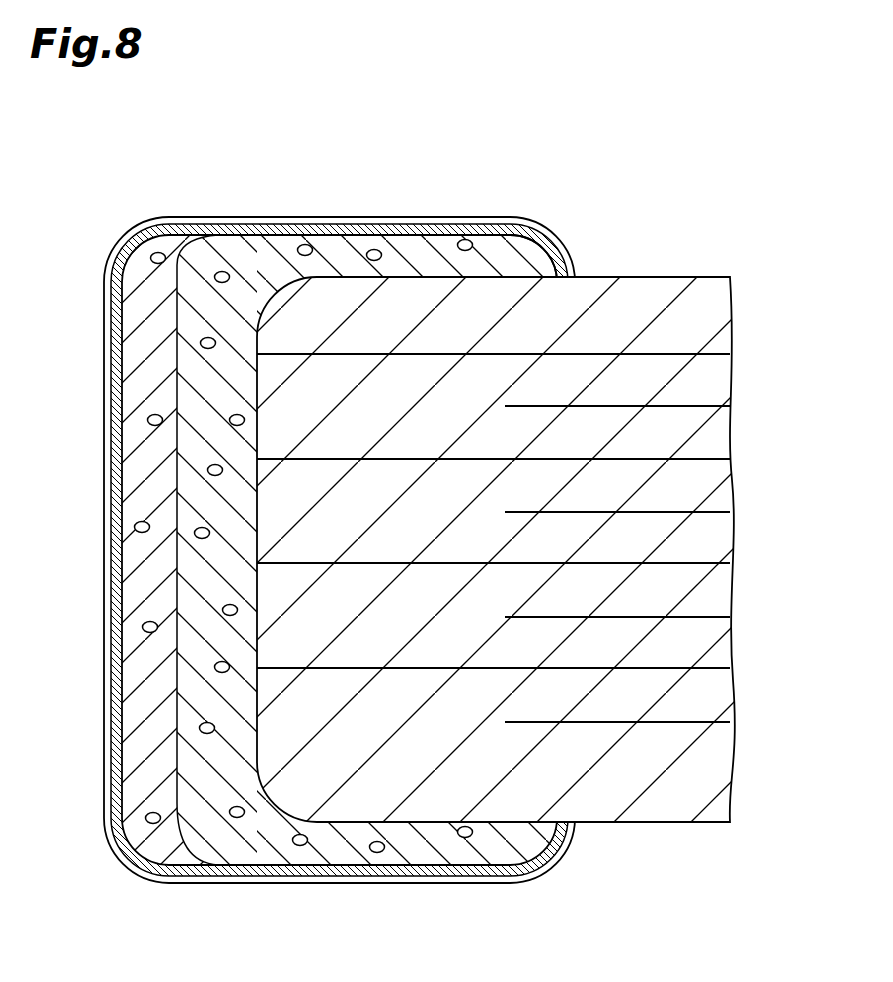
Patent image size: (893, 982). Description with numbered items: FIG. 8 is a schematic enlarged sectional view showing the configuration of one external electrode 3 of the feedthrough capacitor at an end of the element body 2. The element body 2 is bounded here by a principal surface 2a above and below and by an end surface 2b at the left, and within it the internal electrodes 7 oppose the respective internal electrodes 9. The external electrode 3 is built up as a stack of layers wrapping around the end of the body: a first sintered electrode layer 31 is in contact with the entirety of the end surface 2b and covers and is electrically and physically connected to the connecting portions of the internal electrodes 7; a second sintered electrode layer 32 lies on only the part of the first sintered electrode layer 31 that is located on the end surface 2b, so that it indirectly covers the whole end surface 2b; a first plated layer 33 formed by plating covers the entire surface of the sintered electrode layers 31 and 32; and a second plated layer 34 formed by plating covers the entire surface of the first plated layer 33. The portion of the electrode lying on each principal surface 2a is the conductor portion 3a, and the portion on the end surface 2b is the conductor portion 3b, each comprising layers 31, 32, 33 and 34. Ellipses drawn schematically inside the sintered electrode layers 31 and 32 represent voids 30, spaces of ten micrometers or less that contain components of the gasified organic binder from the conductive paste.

The element body 2 is at (536, 576).
The principal surface 2a is at (622, 277).
The end surface 2b is at (177, 592).
The external electrode 3 is at (305, 545).
The conductor portion 3a is at (462, 224).
The conductor portion 3b is at (115, 490).
The internal electrode 7 is at (328, 354).
The internal electrode 9 is at (662, 406).
The void 30 is at (222, 271).
The first sintered electrode layer 31 is at (404, 245).
The second sintered electrode layer 32 is at (175, 245).
The first plated layer 33 is at (330, 235).
The second plated layer 34 is at (255, 232).